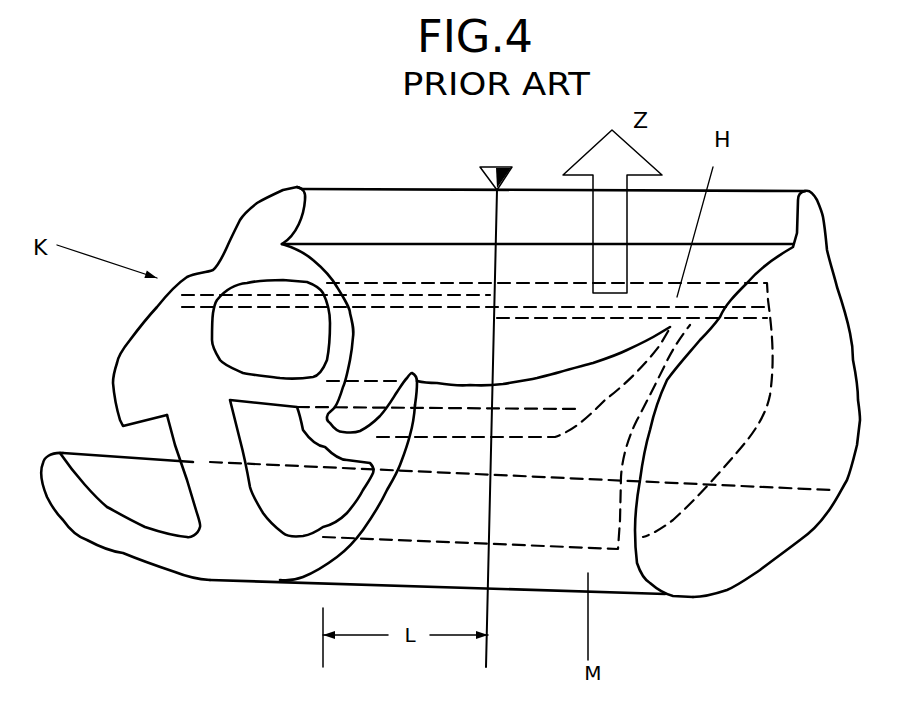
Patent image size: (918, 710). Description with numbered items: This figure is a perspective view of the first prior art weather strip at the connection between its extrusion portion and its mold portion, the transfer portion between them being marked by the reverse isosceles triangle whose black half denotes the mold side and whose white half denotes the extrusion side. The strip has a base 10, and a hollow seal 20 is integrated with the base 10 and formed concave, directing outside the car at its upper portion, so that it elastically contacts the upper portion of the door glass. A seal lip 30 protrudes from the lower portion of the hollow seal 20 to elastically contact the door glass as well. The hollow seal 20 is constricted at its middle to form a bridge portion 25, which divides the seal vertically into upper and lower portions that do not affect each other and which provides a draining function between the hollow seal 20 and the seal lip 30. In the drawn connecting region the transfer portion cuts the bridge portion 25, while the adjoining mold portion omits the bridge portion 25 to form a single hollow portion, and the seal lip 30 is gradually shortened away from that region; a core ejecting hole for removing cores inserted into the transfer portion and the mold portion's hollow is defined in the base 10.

The base 10 is at (242, 278).
The hollow seal 20 is at (293, 505).
The bridge portion 25 is at (283, 387).
The seal lip 30 is at (405, 405).